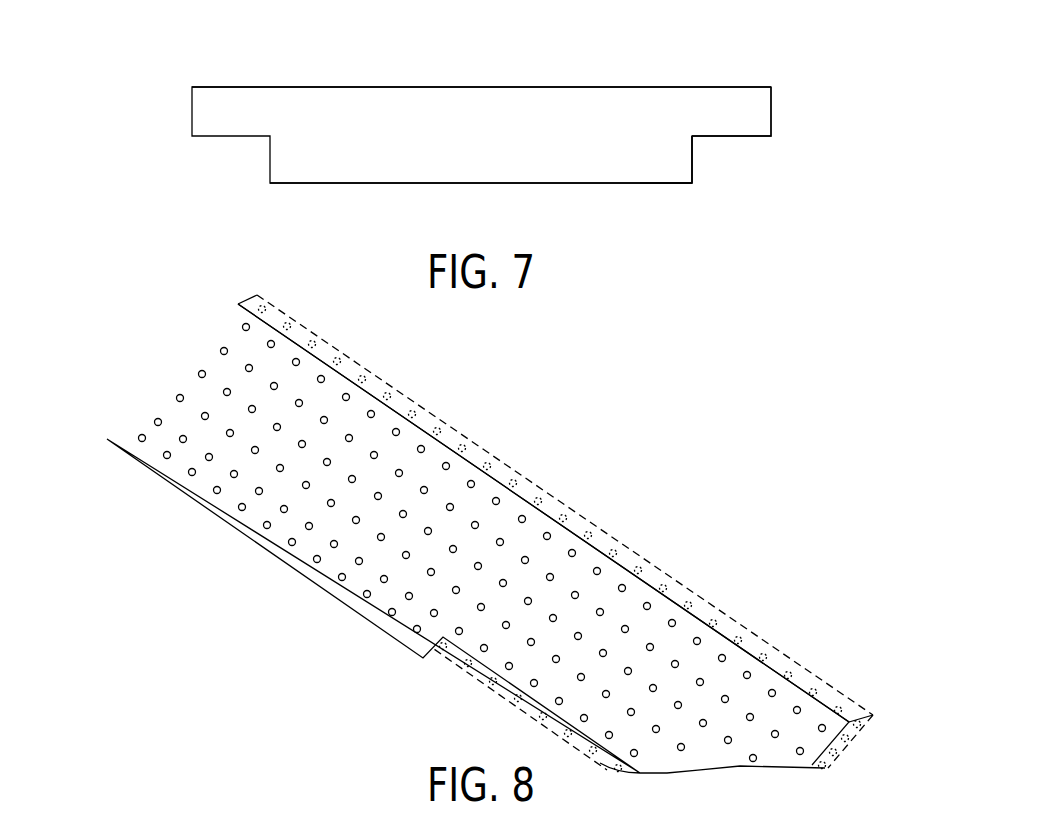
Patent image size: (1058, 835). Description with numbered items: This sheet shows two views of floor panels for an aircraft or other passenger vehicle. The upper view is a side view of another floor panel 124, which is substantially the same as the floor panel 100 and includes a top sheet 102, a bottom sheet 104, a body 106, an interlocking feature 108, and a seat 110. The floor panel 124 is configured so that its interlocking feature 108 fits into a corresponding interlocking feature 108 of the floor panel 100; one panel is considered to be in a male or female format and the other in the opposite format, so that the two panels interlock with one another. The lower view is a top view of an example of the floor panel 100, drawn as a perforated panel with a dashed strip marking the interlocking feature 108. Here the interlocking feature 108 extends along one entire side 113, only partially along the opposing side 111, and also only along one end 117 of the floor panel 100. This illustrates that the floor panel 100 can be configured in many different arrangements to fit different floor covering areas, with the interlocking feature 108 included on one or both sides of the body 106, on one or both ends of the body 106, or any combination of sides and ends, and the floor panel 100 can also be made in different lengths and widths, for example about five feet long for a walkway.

In FIG. 8, the floor panel 100 is at (577, 461).
In FIG. 7, the top sheet 102 is at (672, 86).
In FIG. 7, the bottom sheet 104 is at (668, 183).
In FIG. 7, the body 106 is at (567, 170).
In FIG. 7, the interlocking feature 108 is at (752, 110).
In FIG. 8, the interlocking feature 108 is at (600, 527).
In FIG. 7, the seat 110 is at (695, 137).
In FIG. 8, the opposing side 111 is at (112, 425).
In FIG. 8, the side 113 is at (243, 297).
In FIG. 8, the end 117 is at (873, 709).
In FIG. 7, the floor panel 124 is at (262, 77).